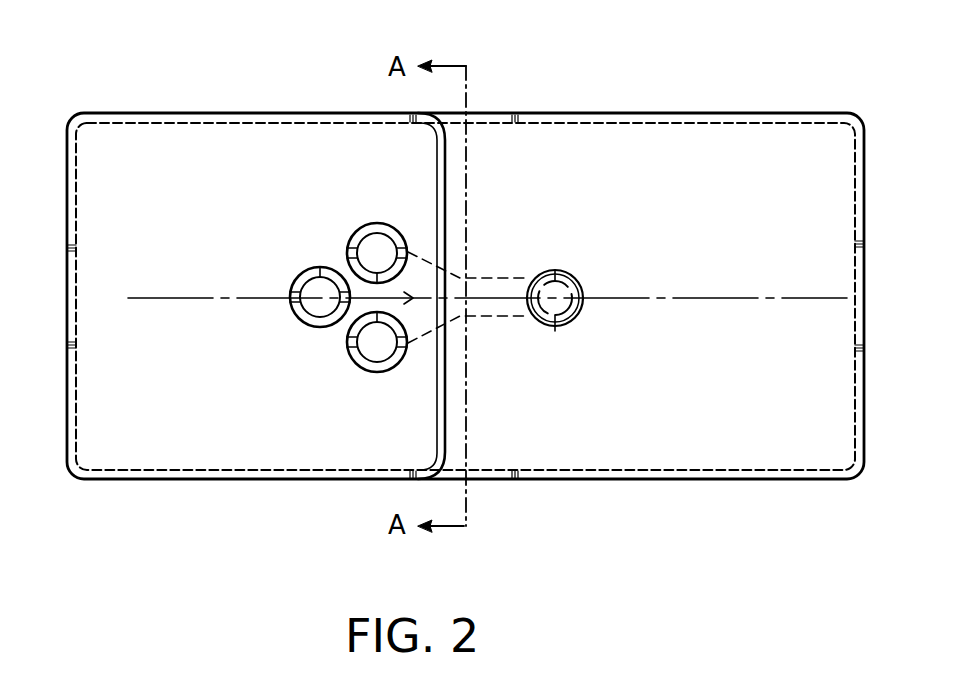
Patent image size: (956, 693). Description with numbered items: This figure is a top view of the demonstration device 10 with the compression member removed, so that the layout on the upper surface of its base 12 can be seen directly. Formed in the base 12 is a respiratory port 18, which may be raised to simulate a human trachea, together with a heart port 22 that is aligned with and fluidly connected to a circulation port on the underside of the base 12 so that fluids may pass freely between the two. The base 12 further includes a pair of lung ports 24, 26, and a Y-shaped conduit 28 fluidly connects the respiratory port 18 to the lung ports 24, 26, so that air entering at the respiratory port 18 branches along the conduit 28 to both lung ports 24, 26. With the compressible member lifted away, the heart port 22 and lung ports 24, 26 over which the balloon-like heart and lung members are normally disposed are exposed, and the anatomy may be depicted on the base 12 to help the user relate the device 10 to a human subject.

The demonstration device 10 is at (587, 83).
The base 12 is at (753, 147).
The respiratory port 18 is at (583, 284).
The heart port 22 is at (319, 327).
The lung port 24 is at (377, 362).
The lung port 26 is at (365, 227).
The Y-shaped conduit 28 is at (492, 284).